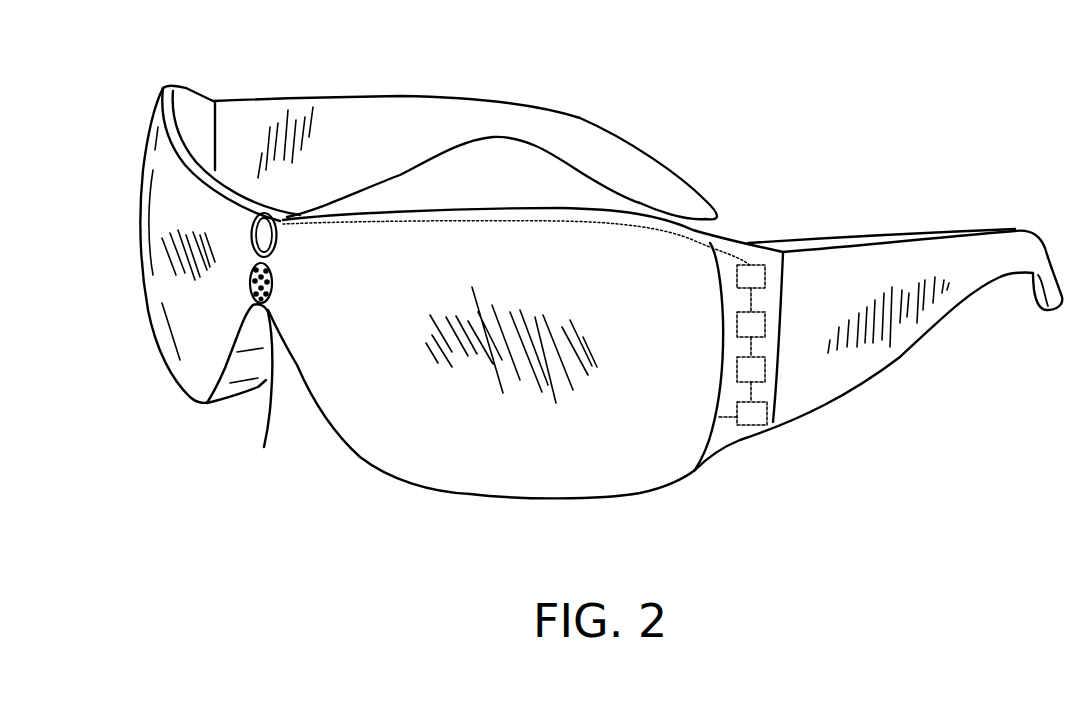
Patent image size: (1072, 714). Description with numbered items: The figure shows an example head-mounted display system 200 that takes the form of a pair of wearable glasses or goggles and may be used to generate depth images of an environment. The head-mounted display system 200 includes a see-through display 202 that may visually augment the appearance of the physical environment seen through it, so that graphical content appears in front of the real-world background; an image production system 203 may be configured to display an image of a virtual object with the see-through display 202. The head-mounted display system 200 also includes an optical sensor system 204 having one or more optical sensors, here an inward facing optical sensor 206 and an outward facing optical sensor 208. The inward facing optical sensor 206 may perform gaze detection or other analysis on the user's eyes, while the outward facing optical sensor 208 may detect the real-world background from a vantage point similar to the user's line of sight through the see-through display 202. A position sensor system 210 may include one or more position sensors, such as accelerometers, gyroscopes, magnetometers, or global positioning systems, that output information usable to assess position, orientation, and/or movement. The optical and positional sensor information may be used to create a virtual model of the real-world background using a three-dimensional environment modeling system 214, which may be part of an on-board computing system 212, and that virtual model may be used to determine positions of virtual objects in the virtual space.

The head-mounted display system 200 is at (601, 305).
The see-through display 202 is at (460, 397).
The image production system 203 is at (755, 415).
The optical sensor system 204 is at (310, 180).
The inward facing optical sensor 206 is at (268, 230).
The outward facing optical sensor 208 is at (268, 405).
The position sensor system 210 is at (757, 320).
The on-board computing system 212 is at (755, 277).
The 3D environment modeling system 214 is at (760, 368).